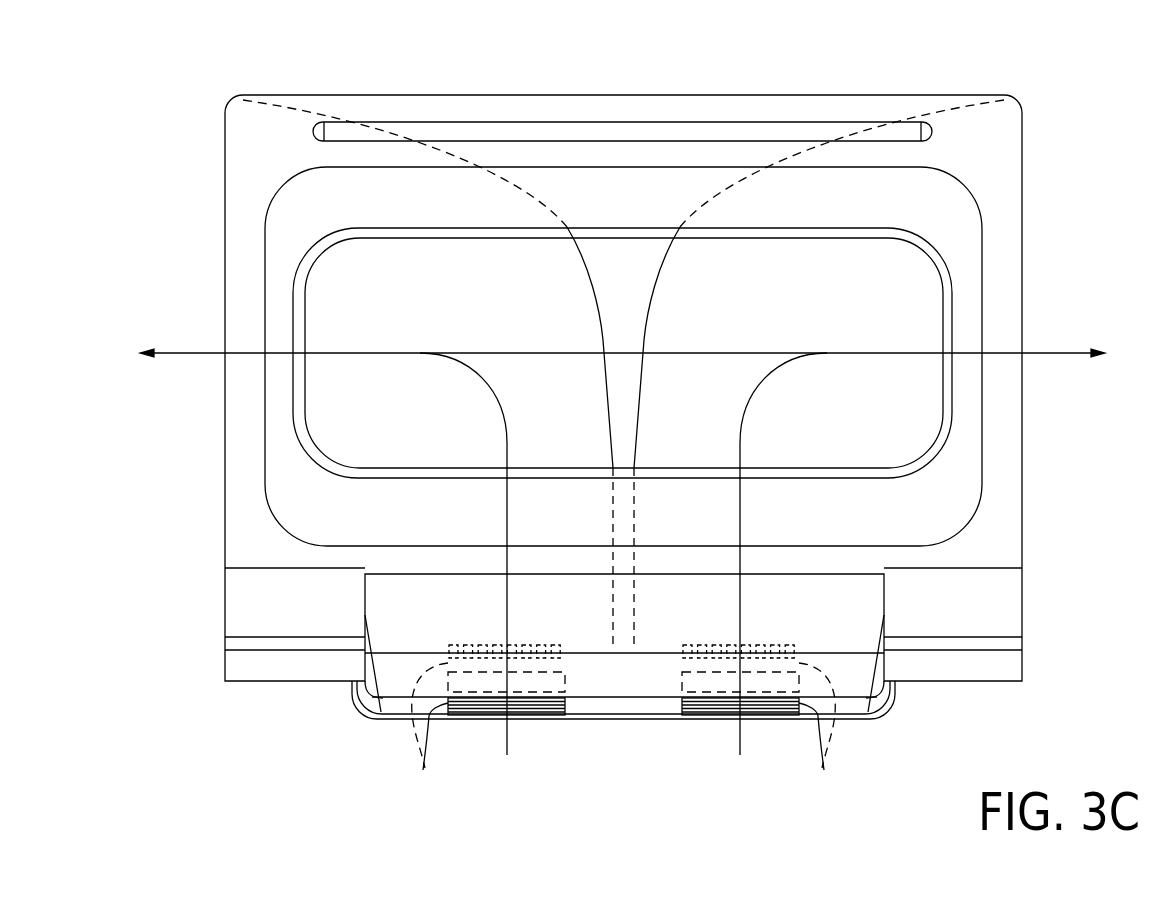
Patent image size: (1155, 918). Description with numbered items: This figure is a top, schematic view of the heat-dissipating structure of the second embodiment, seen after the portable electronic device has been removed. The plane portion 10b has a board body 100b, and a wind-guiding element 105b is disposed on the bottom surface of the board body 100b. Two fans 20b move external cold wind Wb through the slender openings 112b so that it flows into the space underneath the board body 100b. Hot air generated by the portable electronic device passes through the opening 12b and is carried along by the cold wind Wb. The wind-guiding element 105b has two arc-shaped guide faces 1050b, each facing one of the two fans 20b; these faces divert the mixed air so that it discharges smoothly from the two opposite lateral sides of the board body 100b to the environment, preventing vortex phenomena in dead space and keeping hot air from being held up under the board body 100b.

The plane portion 10b is at (1022, 118).
The board body 100b is at (996, 183).
The opening 12b is at (905, 277).
The wind-guiding element 105b is at (632, 272).
The arc-shaped guide faces 1050b is at (601, 331).
The slender openings 112b is at (629, 734).
The fans 20b is at (567, 673).
The cold wind Wb is at (623, 565).